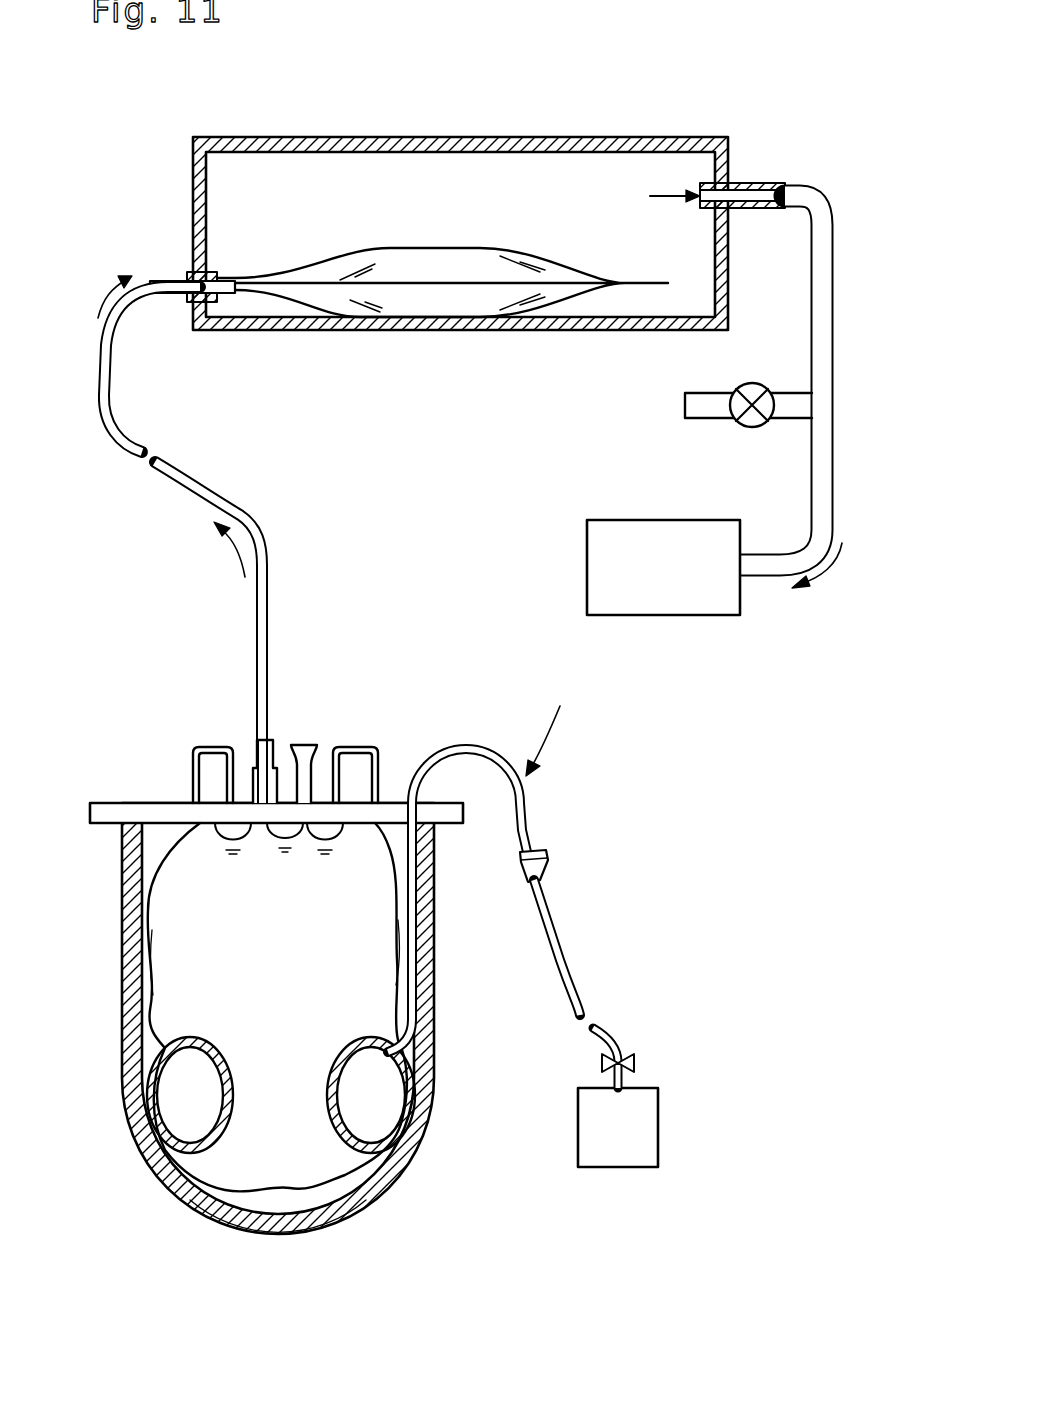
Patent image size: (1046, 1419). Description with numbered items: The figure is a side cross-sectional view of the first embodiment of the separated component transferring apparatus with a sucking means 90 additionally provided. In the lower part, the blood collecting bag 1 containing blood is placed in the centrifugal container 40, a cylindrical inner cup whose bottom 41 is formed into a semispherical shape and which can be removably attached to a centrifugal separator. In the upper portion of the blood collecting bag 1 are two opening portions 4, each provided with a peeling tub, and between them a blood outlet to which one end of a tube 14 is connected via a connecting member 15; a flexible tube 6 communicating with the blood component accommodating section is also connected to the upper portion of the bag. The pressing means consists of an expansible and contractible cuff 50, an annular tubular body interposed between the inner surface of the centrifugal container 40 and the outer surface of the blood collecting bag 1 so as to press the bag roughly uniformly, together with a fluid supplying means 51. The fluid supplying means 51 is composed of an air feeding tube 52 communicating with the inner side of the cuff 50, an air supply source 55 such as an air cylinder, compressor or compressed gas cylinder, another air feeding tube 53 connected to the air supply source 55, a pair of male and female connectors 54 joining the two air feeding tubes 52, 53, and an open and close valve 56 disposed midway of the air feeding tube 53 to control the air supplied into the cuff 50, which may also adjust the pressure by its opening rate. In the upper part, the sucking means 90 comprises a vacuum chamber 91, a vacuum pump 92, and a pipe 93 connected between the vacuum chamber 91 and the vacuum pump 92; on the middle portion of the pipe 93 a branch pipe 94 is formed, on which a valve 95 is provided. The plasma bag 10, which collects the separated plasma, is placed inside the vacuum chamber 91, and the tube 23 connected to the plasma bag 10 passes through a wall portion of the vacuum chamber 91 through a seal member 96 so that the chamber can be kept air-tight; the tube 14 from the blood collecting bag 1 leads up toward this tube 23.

The blood collecting bag 1 is at (185, 985).
The opening portion 4 is at (212, 765).
The flexible tube 6 is at (305, 745).
The plasma bag 10 is at (410, 296).
The tube 14 is at (270, 555).
The connecting member 15 is at (252, 752).
The tube 23 is at (125, 399).
The centrifugal container 40 is at (128, 940).
The bottom 41 is at (242, 1232).
The cuff 50 is at (190, 1165).
The fluid supplying means 51 is at (557, 724).
The air feeding tube 52 is at (468, 750).
The air feeding tube 53 is at (560, 945).
The connectors 54 is at (549, 870).
The air supply source 55 is at (618, 1172).
The open and close valve 56 is at (634, 1062).
The sucking means 90 is at (760, 168).
The vacuum chamber 91 is at (485, 170).
The vacuum pump 92 is at (700, 602).
The pipe 93 is at (826, 312).
The branch pipe 94 is at (707, 407).
The valve 95 is at (752, 422).
The outlet fitting 96 is at (190, 276).